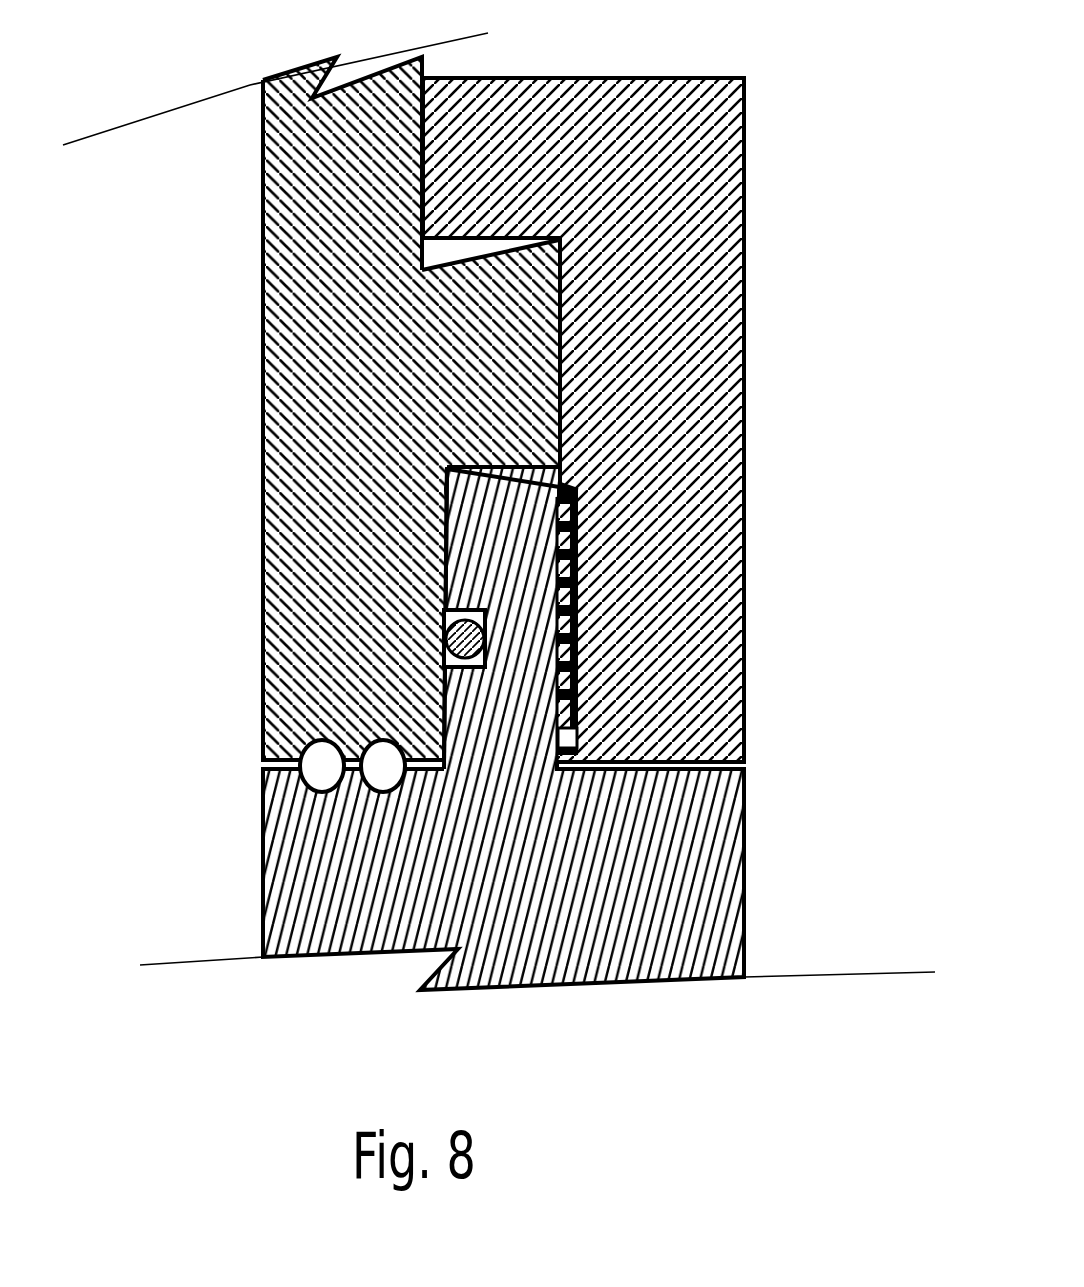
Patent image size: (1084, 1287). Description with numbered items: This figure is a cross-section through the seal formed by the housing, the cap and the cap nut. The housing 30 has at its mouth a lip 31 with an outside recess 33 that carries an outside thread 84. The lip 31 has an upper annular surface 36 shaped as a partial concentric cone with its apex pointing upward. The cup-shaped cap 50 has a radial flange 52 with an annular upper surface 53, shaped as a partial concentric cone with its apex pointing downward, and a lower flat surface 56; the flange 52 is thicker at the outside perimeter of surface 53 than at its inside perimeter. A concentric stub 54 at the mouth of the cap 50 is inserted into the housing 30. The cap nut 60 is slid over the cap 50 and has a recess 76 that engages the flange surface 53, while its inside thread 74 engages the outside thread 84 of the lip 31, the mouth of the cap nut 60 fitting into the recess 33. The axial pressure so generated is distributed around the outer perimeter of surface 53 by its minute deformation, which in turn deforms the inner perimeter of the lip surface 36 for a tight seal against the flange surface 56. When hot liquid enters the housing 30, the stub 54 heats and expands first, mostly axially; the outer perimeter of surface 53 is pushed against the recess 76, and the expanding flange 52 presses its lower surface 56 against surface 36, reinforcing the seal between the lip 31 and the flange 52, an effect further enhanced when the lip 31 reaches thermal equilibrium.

The housing 30 is at (503, 728).
The lip 31 is at (520, 567).
The outside recess 33 is at (617, 772).
The upper annular surface 36 is at (563, 467).
The cap 50 is at (359, 408).
The radial flange 52 is at (457, 390).
The annular upper surface 53 is at (498, 262).
The concentric stub 54 is at (388, 621).
The lower flat surface 56 is at (572, 466).
The cap nut 60 is at (583, 384).
The inside thread 74 is at (580, 618).
The recess 76 is at (467, 238).
The outside thread 84 is at (556, 688).